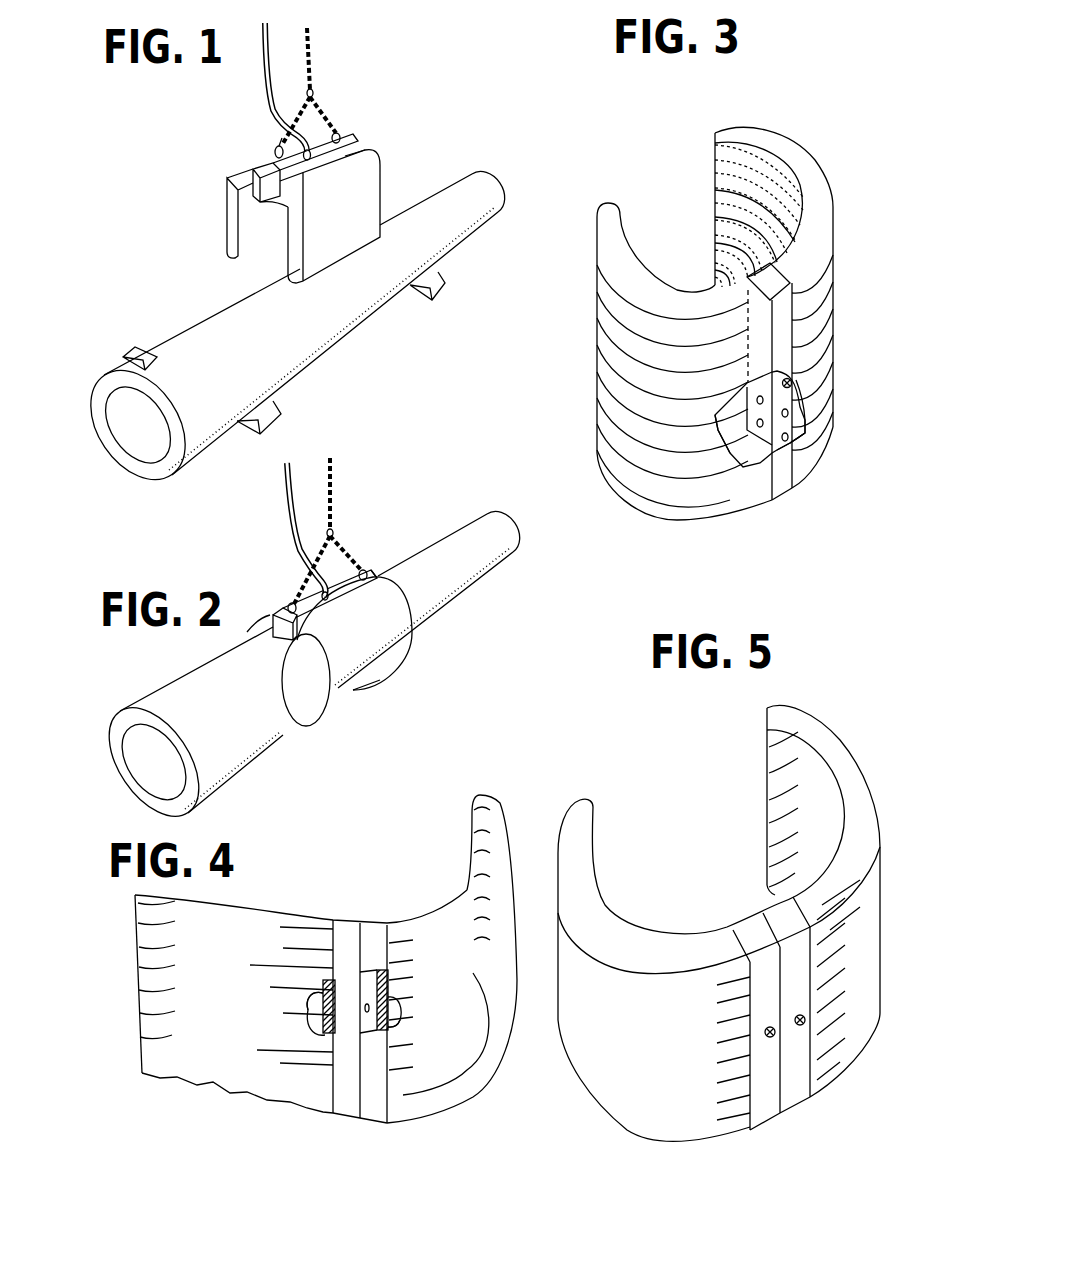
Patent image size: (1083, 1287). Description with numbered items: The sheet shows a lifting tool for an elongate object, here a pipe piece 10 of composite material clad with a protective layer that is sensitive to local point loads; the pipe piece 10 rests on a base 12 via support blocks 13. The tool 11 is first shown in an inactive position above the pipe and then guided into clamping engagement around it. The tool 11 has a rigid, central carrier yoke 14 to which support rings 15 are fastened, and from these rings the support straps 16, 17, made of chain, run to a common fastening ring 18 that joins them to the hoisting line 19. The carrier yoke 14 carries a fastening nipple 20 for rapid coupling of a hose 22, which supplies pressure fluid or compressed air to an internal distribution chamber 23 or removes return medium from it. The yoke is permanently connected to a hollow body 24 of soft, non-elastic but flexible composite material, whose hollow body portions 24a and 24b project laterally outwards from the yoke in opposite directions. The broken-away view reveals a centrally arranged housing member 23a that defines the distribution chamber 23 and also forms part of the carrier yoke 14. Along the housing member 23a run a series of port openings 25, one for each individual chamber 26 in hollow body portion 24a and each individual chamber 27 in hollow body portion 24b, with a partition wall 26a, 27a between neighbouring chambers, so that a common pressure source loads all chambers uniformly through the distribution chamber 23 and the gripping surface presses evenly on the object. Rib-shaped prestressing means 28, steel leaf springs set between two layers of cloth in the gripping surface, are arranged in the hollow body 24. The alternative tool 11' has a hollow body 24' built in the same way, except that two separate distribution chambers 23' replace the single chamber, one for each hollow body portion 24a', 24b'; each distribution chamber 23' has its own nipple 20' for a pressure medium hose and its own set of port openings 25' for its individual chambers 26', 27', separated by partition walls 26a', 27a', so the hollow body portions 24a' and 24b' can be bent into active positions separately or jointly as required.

In FIG. 1, the pipe piece 10 is at (205, 330).
In FIG. 2, the pipe piece 10 is at (248, 740).
In FIG. 1, the tool 11 is at (180, 155).
In FIG. 2, the tool 11 is at (380, 468).
In FIG. 4, the tool 11' is at (75, 991).
In FIG. 5, the tool 11' is at (922, 737).
In FIG. 1, the base 12 is at (396, 370).
In FIG. 1, the support blocks 13 is at (443, 285).
In FIG. 1, the carrier yoke 14 is at (372, 136).
In FIG. 2, the carrier yoke 14 is at (287, 642).
In FIG. 1, the support rings 15 is at (342, 138).
In FIG. 2, the support rings 15 is at (366, 572).
In FIG. 1, the support strap 16 is at (283, 137).
In FIG. 2, the support strap 16 is at (303, 570).
In FIG. 1, the support strap 17 is at (320, 108).
In FIG. 2, the support strap 17 is at (343, 550).
In FIG. 1, the fastening ring 18 is at (315, 85).
In FIG. 2, the fastening ring 18 is at (335, 525).
In FIG. 1, the hoisting line 19 is at (309, 36).
In FIG. 2, the hoisting line 19 is at (332, 470).
In FIG. 1, the fastening nipple 20 is at (385, 163).
In FIG. 2, the fastening nipple 20 is at (433, 607).
In FIG. 3, the fastening nipple 20 is at (838, 334).
In FIG. 5, the nipple 20' is at (803, 1036).
In FIG. 1, the hose 22 is at (265, 96).
In FIG. 2, the hose 22 is at (285, 487).
In FIG. 3, the distribution chamber 23 is at (797, 415).
In FIG. 4, the distribution chambers 23' is at (388, 993).
In FIG. 5, the distribution chambers 23' is at (769, 1013).
In FIG. 3, the housing member 23a is at (782, 490).
In FIG. 1, the hollow body 24 is at (258, 232).
In FIG. 2, the hollow body 24 is at (398, 698).
In FIG. 4, the hollow body 24' is at (301, 975).
In FIG. 1, the hollow body portion 24a is at (191, 214).
In FIG. 2, the hollow body portion 24a is at (212, 670).
In FIG. 3, the hollow body portion 24a is at (645, 361).
In FIG. 4, the hollow body portion 24a' is at (112, 966).
In FIG. 5, the hollow body portion 24a' is at (719, 970).
In FIG. 1, the hollow body portion 24b is at (412, 208).
In FIG. 2, the hollow body portion 24b is at (354, 668).
In FIG. 3, the hollow body portion 24b is at (801, 307).
In FIG. 4, the hollow body portion 24b' is at (452, 959).
In FIG. 5, the hollow body portion 24b' is at (769, 893).
In FIG. 3, the port openings 25 is at (790, 462).
In FIG. 4, the port openings 25 is at (411, 993).
In FIG. 4, the port openings 25' is at (279, 1066).
In FIG. 3, the individual chamber 26 is at (721, 463).
In FIG. 4, the individual chamber 26' is at (231, 1064).
In FIG. 3, the partition wall 26a is at (646, 491).
In FIG. 4, the partition wall 26a' is at (335, 937).
In FIG. 3, the individual chamber 27 is at (841, 411).
In FIG. 4, the individual chamber 27' is at (451, 1073).
In FIG. 3, the partition wall 27a is at (829, 477).
In FIG. 4, the partition wall 27a' is at (418, 1093).
In FIG. 3, the prestressing means 28 is at (715, 230).